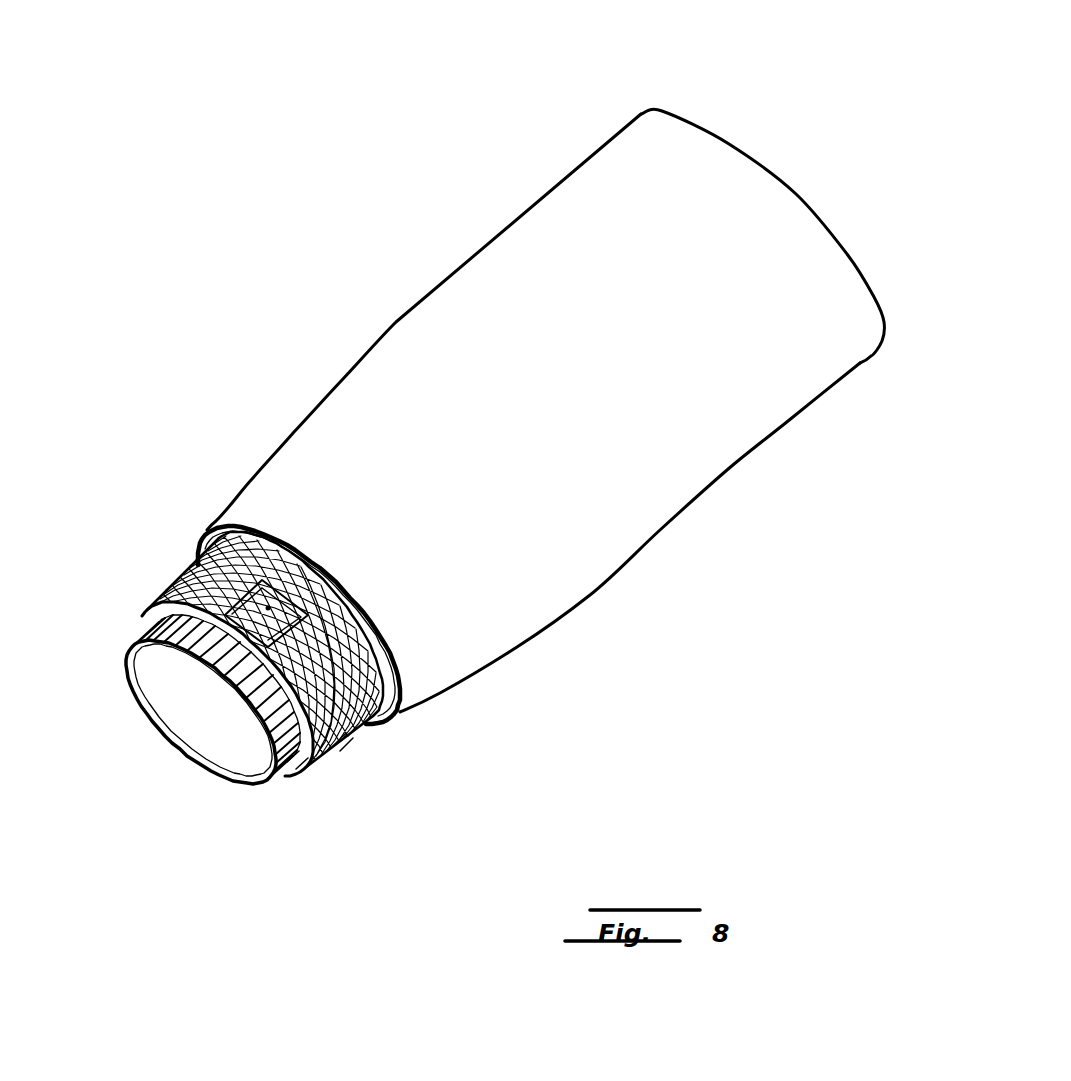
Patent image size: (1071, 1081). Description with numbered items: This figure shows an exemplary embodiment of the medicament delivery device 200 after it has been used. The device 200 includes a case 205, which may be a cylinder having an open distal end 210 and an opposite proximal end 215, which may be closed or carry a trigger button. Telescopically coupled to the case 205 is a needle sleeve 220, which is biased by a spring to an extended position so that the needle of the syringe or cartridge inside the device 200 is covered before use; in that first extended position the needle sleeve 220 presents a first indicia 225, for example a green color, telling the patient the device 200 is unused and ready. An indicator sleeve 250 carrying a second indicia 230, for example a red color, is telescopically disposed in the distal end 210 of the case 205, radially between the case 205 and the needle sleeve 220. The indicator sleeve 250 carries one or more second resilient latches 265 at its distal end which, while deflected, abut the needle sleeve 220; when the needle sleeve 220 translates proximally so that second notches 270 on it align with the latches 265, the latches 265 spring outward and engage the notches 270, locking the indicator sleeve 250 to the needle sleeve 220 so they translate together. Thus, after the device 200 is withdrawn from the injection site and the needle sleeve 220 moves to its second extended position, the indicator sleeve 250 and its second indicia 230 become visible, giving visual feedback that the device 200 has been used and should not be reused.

The delivery device 200 is at (346, 326).
The case 205 is at (560, 405).
The open distal end 210 is at (257, 588).
The closed end 215 is at (639, 115).
The needle sleeve 220 is at (128, 638).
The first indicia 225 is at (303, 763).
The second indicia 230 is at (350, 742).
The indicator sleeve 250 is at (170, 579).
The second resilient latches 265 is at (298, 560).
The second notches 270 is at (324, 572).